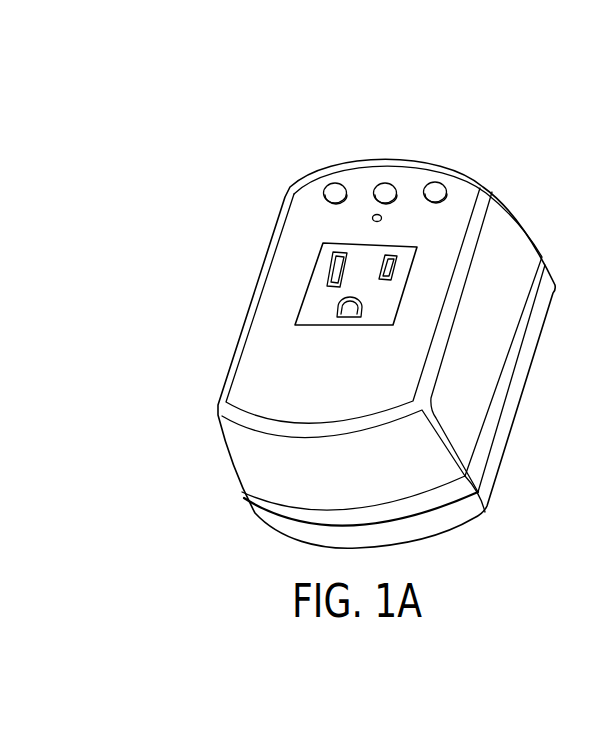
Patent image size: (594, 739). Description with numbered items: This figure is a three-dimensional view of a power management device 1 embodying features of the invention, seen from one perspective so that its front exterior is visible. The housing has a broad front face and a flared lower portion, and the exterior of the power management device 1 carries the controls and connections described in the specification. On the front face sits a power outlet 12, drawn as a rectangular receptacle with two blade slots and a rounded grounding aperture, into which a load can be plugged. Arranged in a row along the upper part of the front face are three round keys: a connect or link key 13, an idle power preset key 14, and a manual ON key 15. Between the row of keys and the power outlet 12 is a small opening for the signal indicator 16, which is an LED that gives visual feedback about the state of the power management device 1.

The power management device 1 is at (380, 485).
The power outlet 12 is at (318, 288).
The connect or link key 13 is at (438, 190).
The idle power preset key 14 is at (333, 190).
The manual ON key 15 is at (386, 186).
The signal indicator 16 is at (371, 219).